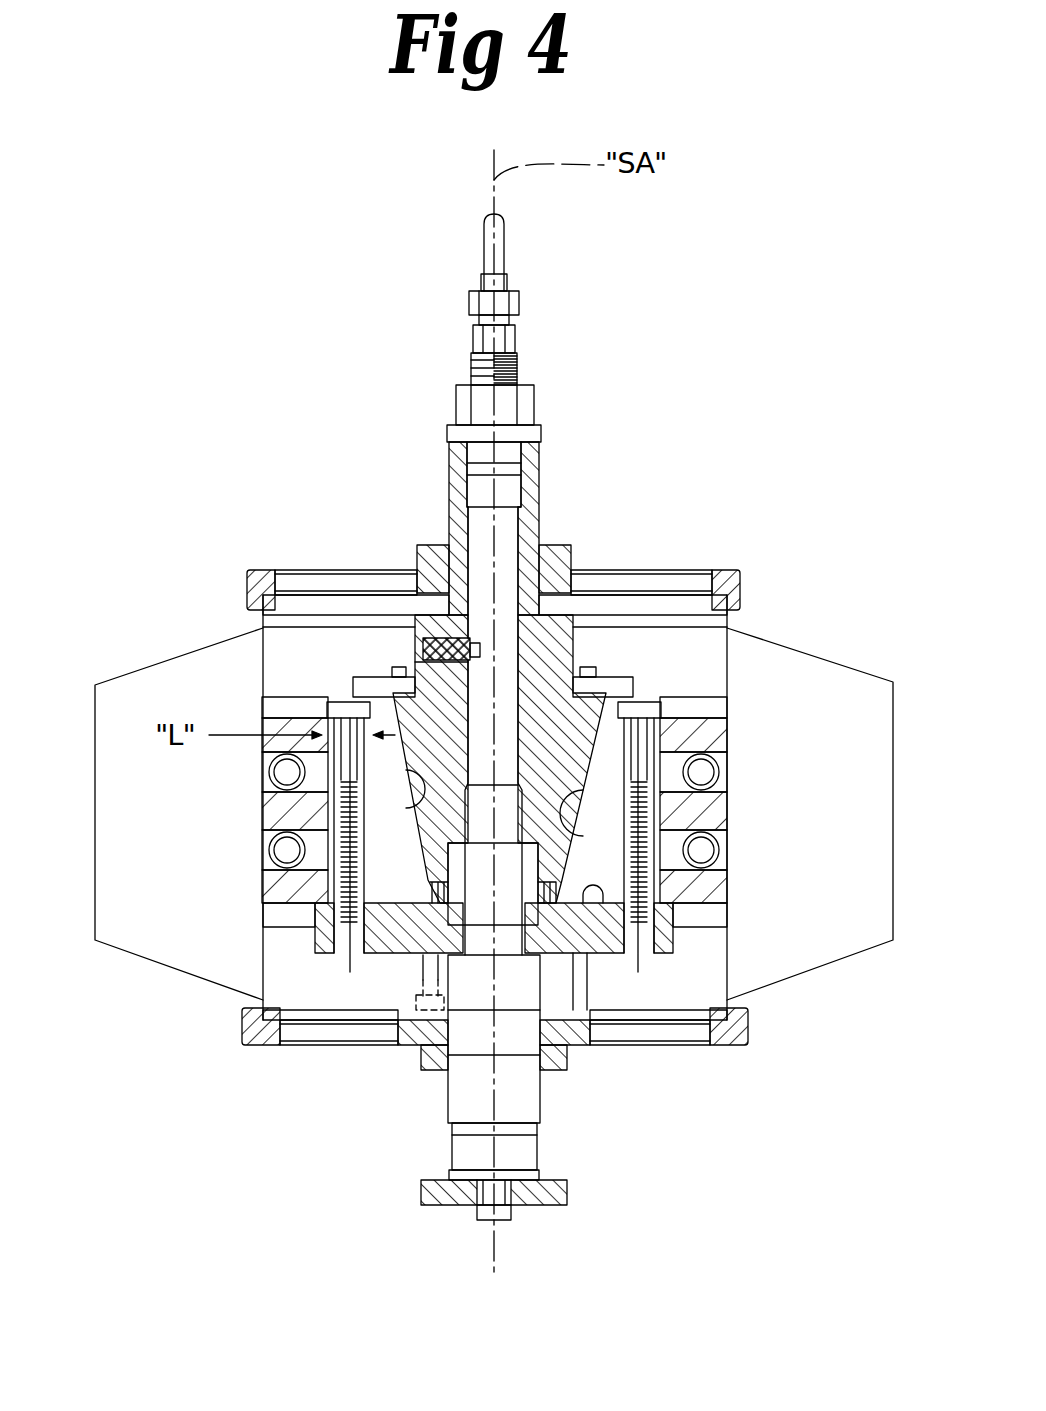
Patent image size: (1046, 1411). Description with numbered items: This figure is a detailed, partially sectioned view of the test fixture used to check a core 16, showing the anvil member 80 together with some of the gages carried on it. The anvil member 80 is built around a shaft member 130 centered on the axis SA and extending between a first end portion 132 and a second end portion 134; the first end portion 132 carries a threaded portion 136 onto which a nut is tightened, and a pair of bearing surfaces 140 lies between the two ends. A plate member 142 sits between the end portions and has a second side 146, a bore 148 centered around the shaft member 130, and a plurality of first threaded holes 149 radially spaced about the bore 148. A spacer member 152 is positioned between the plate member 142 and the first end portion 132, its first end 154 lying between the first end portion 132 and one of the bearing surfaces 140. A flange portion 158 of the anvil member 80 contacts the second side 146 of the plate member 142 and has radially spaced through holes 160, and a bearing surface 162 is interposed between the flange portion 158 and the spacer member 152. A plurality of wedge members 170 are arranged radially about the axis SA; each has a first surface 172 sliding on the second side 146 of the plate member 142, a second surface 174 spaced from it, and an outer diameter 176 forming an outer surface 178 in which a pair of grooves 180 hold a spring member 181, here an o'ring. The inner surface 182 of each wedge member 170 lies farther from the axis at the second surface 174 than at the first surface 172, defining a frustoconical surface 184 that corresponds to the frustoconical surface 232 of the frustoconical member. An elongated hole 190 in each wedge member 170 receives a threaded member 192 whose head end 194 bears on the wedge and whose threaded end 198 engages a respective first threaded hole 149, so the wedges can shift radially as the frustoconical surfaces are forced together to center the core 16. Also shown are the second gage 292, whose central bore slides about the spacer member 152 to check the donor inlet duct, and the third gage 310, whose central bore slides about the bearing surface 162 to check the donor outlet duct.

The core 16 is at (193, 652).
The anvil member 80 is at (541, 457).
The shaft member 130 is at (541, 520).
The first end portion 132 is at (517, 367).
The second end portion 134 is at (521, 1205).
The threaded portion 136 is at (471, 370).
The bearing surfaces 140 is at (541, 481).
The plate member 142 is at (543, 1018).
The second side 146 is at (586, 905).
The bore 148 is at (623, 953).
The first threaded holes 149 is at (340, 916).
The spacer member 152 is at (449, 458).
The first end 154 is at (447, 432).
The flange portion 158 is at (513, 996).
The through holes 160 is at (378, 985).
The bearing surface 162 is at (505, 942).
The wedge members 170 is at (712, 707).
The first surface 172 is at (655, 915).
The second surface 174 is at (680, 692).
The outer diameter 176 is at (727, 733).
The outer surface 178 is at (727, 812).
The grooves 180 is at (727, 772).
The spring member 181 is at (268, 851).
The inner surface 182 is at (566, 838).
The frustoconical surface 184 is at (268, 775).
The elongated hole 190 is at (350, 862).
The threaded member 192 is at (655, 700).
The head end 194 is at (640, 700).
The threaded end 198 is at (335, 915).
The frustoconical surface 232 is at (400, 795).
The second gage 292 is at (717, 566).
The third gage 310 is at (750, 1037).